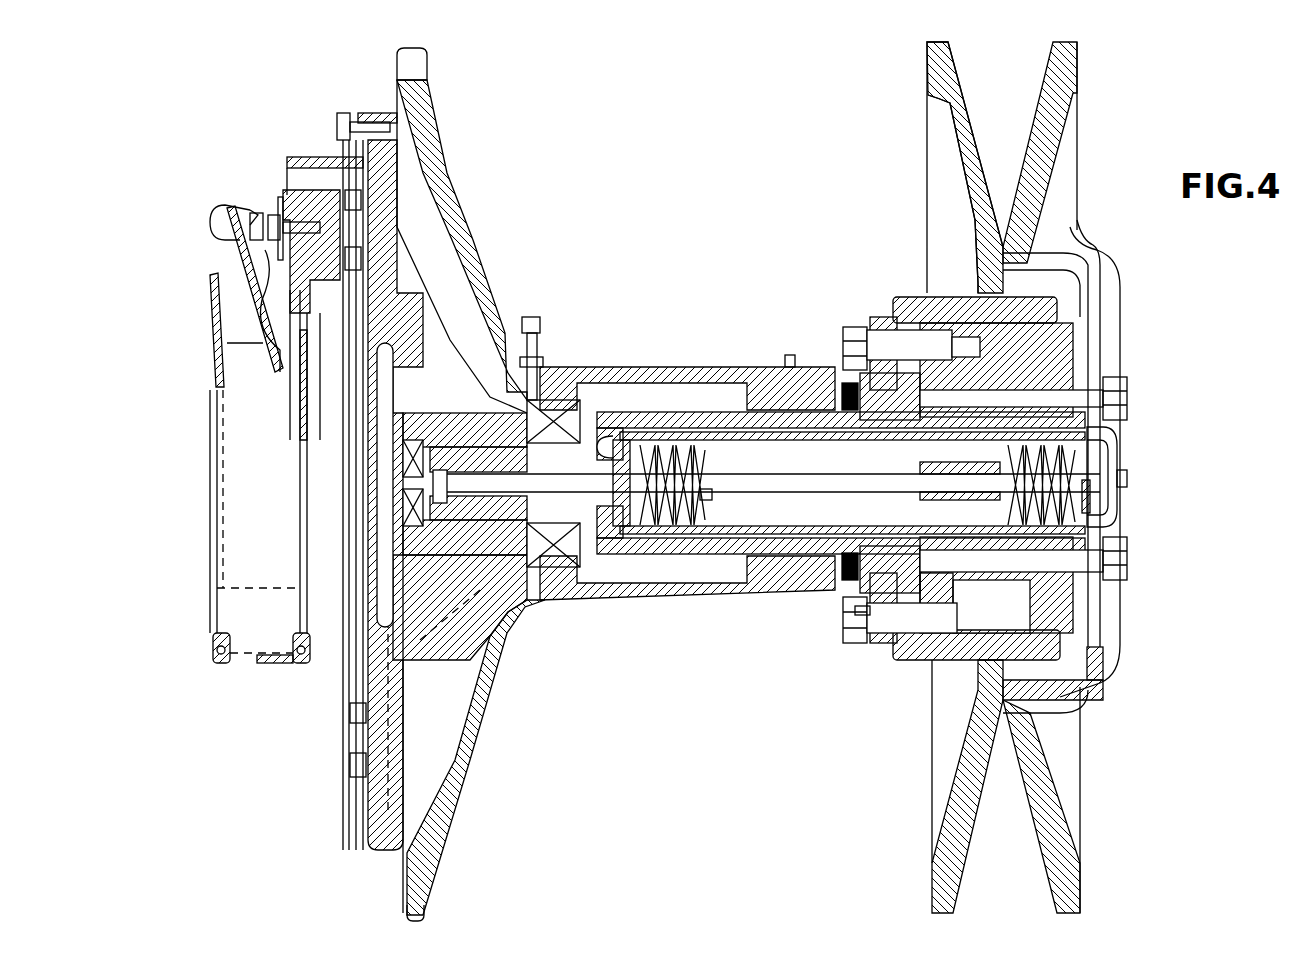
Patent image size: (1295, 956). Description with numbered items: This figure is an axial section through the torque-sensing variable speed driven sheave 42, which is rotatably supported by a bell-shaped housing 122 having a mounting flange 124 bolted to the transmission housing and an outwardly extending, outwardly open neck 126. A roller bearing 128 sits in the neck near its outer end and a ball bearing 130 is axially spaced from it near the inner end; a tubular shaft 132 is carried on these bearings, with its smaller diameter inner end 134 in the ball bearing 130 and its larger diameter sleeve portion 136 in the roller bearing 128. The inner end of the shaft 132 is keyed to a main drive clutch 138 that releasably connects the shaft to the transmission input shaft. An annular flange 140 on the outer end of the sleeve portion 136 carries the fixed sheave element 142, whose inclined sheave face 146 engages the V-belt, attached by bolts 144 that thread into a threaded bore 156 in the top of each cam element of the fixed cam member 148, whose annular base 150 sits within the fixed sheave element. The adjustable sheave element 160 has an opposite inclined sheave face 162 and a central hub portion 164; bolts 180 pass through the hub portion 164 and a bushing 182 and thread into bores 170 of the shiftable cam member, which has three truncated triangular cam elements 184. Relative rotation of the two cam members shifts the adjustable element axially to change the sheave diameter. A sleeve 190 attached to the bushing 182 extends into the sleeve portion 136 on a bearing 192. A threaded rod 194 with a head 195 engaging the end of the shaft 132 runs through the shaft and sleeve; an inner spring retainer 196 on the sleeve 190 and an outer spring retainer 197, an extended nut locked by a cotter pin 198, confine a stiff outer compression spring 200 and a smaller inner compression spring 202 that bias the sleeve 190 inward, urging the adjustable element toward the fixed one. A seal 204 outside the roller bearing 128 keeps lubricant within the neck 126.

The torque-sensing sheave 42 is at (1011, 477).
The bell-shaped housing 122 is at (487, 680).
The mounting flange 124 is at (418, 88).
The neck 126 is at (690, 358).
The roller bearing 128 is at (787, 575).
The ball bearing 130 is at (532, 565).
The tubular shaft 132 is at (668, 558).
The smaller diameter inner end 134 is at (462, 425).
The sleeve portion 136 is at (678, 417).
The main drive clutch 138 is at (330, 795).
The annular flange 140 is at (873, 305).
The fixed sheave element 142 is at (927, 72).
The bolts 144 is at (850, 338).
The inclined sheave face 146 is at (972, 115).
The fixed cam member 148 is at (1025, 605).
The base 150 is at (1086, 612).
The threaded bore 156 is at (940, 344).
The adjustable sheave element 160 is at (1063, 78).
The inclined sheave face 162 is at (1028, 152).
The hub portion 164 is at (1113, 450).
The threaded bores 170 is at (937, 540).
The bolts 180 is at (1120, 396).
The bushing 182 is at (978, 577).
The cam elements 184 is at (905, 652).
The sleeve 190 is at (829, 441).
The bearing 192 is at (753, 441).
The threaded rod 194 is at (777, 482).
The head 195 is at (433, 485).
The inner spring retainer 196 is at (603, 430).
The outer spring retainer 197 is at (1004, 462).
The cotter pin 198 is at (1095, 510).
The outer compression spring 200 is at (692, 452).
The inner compression spring 202 is at (709, 498).
The seal 204 is at (838, 583).